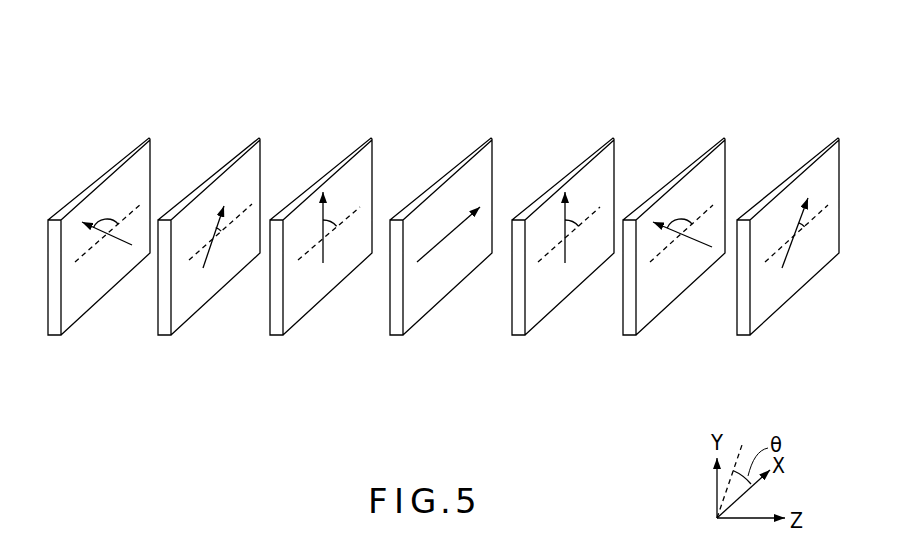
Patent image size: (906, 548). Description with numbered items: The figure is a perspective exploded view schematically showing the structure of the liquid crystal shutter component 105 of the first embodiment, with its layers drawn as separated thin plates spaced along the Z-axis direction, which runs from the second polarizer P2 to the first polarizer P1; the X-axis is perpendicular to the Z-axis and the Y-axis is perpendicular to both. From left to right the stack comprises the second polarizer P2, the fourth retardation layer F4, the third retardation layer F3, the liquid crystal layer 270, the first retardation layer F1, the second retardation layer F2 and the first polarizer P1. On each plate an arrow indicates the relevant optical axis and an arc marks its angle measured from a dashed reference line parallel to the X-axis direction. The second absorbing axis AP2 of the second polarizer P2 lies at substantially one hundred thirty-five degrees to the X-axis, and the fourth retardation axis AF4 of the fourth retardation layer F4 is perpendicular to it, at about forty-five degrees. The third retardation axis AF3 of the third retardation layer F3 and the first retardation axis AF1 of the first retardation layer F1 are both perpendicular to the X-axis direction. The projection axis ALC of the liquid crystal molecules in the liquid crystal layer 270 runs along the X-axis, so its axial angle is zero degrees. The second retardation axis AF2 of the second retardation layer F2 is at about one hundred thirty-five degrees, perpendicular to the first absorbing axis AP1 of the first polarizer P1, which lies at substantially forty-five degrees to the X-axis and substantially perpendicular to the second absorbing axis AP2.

The liquid crystal shutter component 105 is at (745, 60).
The second polarizer P2 is at (85, 300).
The second absorbing axis AP2 is at (90, 222).
The fourth retardation layer F4 is at (197, 300).
The fourth retardation axis AF4 is at (214, 228).
The third retardation layer F3 is at (307, 300).
The third retardation axis AF3 is at (318, 216).
The liquid crystal layer 270 is at (433, 298).
The projection axis of the longitudinal axis of the liquid crystal molecules ALC is at (435, 247).
The first retardation layer F1 is at (547, 300).
The first retardation axis AF1 is at (560, 222).
The second retardation layer F2 is at (662, 300).
The second retardation axis AF2 is at (665, 225).
The first polarizer P1 is at (773, 300).
The first absorbing axis AP1 is at (791, 237).